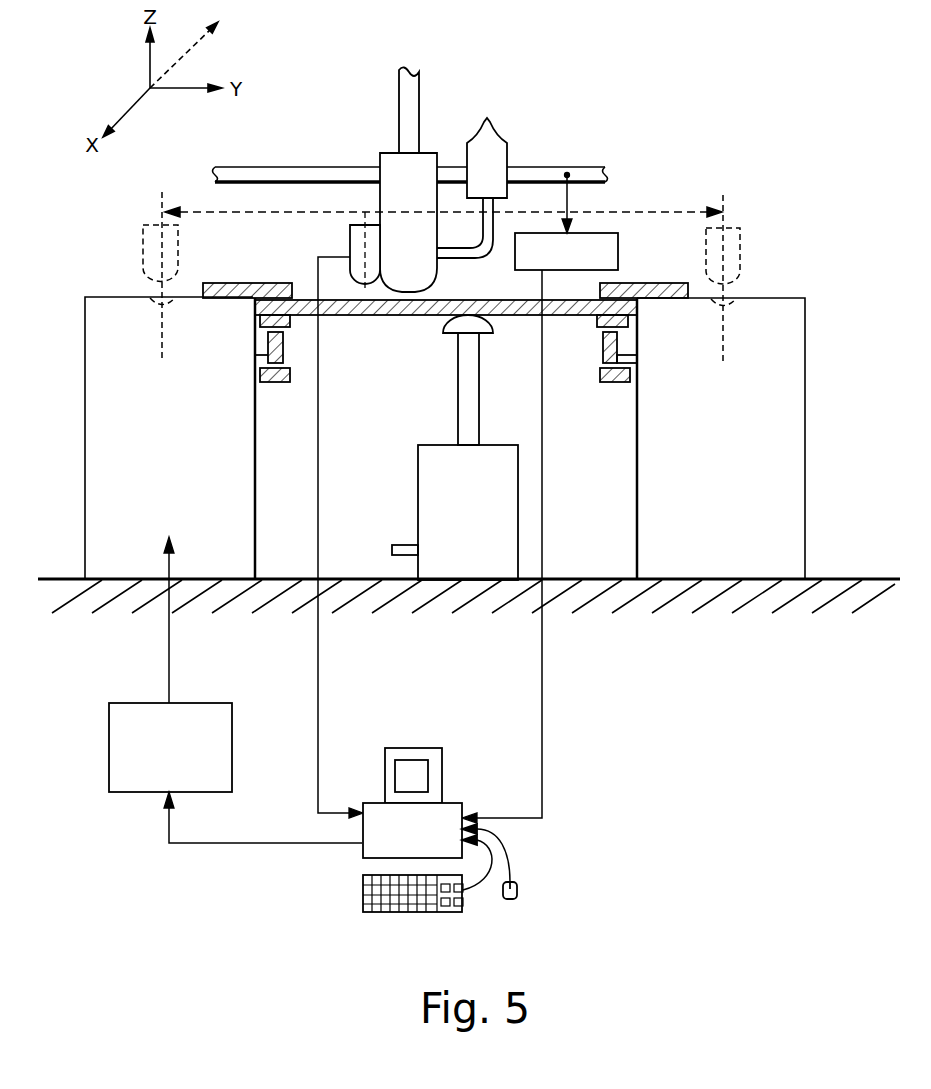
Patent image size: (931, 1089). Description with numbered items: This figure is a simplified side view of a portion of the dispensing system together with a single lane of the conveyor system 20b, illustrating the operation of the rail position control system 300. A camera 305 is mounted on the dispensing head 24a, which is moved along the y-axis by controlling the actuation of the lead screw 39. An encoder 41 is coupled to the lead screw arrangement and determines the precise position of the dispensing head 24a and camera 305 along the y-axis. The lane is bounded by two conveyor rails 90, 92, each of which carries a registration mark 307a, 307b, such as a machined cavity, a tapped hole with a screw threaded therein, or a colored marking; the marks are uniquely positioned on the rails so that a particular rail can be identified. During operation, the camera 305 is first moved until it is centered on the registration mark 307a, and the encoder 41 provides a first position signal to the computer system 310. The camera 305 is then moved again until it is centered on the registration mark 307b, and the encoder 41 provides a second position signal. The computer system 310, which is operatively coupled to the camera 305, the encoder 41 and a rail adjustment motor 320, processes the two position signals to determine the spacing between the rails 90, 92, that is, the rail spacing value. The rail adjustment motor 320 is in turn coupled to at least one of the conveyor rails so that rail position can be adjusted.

The conveyor system lane 20b is at (680, 112).
The dispensing head 24a is at (380, 158).
The lead screw 39 is at (246, 167).
The encoder 41 is at (618, 240).
The conveyor rail 90 is at (85, 443).
The conveyor rail 92 is at (805, 437).
The rail position control system 300 is at (568, 856).
The camera 305 is at (350, 238).
The registration mark 307a is at (170, 305).
The registration mark 307b is at (718, 303).
The computer system 310 is at (358, 863).
The rail adjustment motor 320 is at (128, 703).